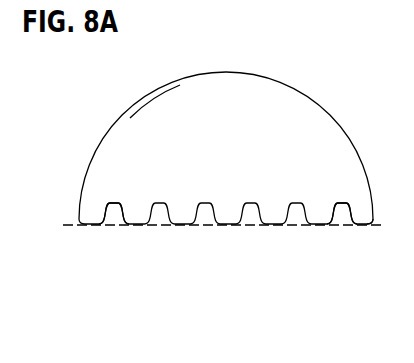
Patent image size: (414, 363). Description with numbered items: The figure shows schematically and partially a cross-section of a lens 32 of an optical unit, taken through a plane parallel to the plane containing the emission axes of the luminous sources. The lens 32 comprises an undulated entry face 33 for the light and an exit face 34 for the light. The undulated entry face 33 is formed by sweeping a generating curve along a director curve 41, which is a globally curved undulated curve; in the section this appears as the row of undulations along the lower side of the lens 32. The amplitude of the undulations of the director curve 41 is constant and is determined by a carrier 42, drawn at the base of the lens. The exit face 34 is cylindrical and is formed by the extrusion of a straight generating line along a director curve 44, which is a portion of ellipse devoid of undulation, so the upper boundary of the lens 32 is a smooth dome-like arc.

The lens 32 is at (255, 240).
The undulated entry face 33 is at (339, 203).
The exit face 34 is at (333, 119).
The director curve 41 is at (104, 212).
The carrier 42 is at (379, 229).
The director curve 44 is at (152, 97).